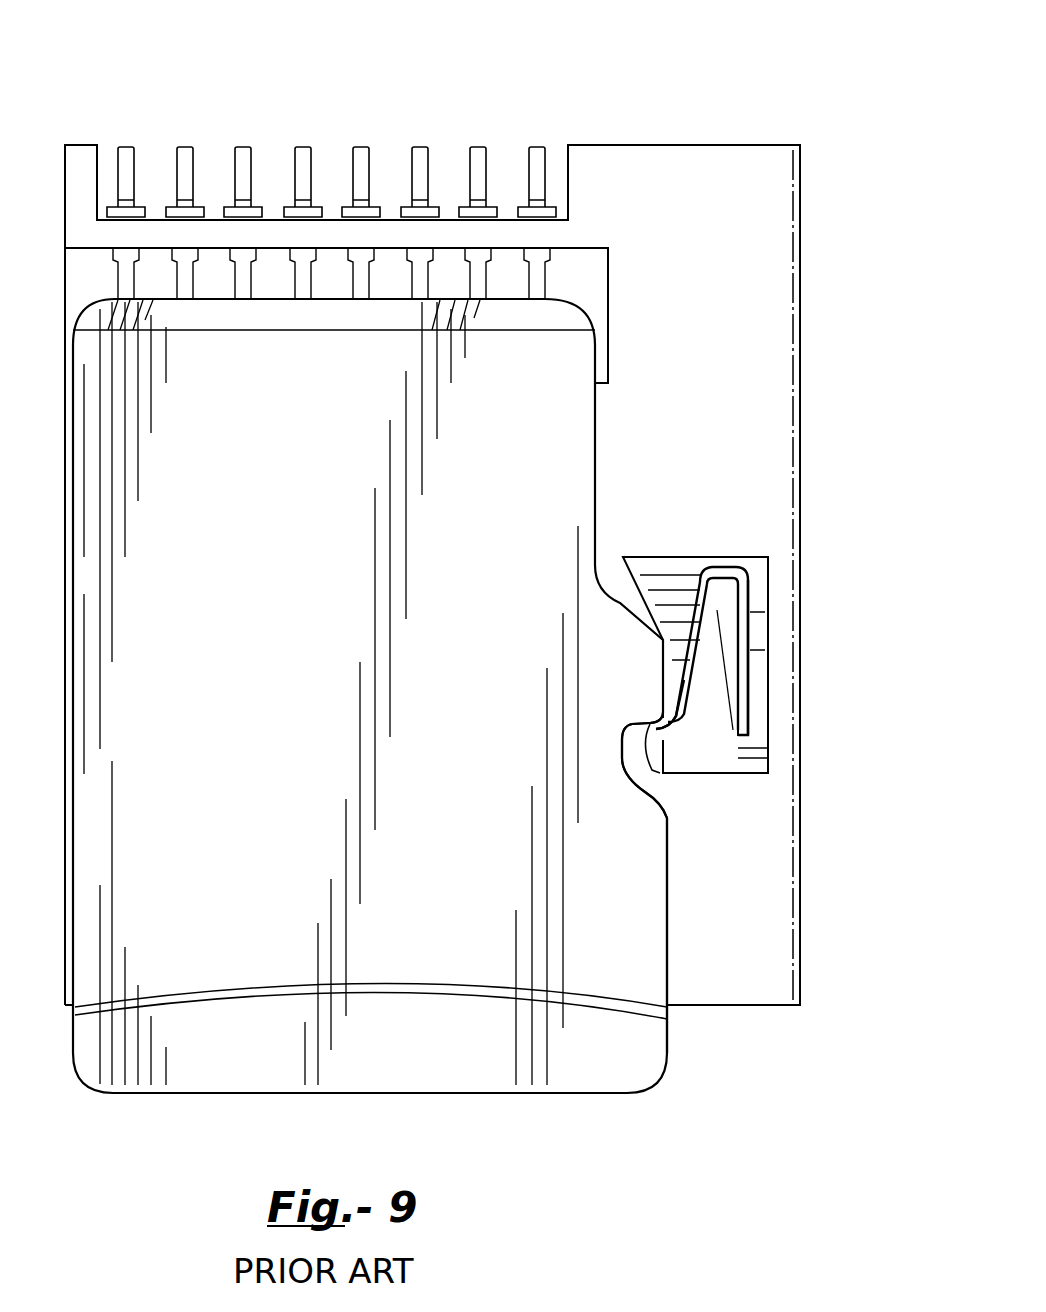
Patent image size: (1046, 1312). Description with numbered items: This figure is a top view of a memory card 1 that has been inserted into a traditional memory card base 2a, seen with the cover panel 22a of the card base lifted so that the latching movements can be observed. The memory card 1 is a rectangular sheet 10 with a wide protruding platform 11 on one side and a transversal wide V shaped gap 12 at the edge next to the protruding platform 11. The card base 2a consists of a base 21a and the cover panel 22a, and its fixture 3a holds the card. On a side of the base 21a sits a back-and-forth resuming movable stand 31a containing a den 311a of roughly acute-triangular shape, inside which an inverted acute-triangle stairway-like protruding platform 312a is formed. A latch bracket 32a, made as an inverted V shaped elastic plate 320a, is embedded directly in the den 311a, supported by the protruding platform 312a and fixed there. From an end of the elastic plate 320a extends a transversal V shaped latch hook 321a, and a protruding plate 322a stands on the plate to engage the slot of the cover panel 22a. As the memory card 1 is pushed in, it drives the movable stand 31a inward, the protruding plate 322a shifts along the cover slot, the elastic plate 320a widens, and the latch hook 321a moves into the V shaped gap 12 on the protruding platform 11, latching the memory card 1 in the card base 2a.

The memory card 1 is at (672, 1058).
The rectangular sheet 10 is at (445, 918).
The protruding platform 11 is at (670, 882).
The transversal wide V shaped gap 12 is at (660, 795).
The traditional memory card base 2a is at (558, 132).
The base 21a is at (388, 213).
The cover panel 22a is at (798, 283).
The fixture 3a is at (770, 590).
The back-and-forth resuming movable stand 31a is at (704, 556).
The latch bracket 32a is at (749, 682).
The den 311a is at (743, 735).
The inverted acute-triangle stairway-like protruding platform 312a is at (727, 640).
The inverted V shaped elastic plate 320a is at (739, 655).
The transversal V shaped latch hook 321a is at (663, 757).
The protruding plate 322a is at (690, 712).